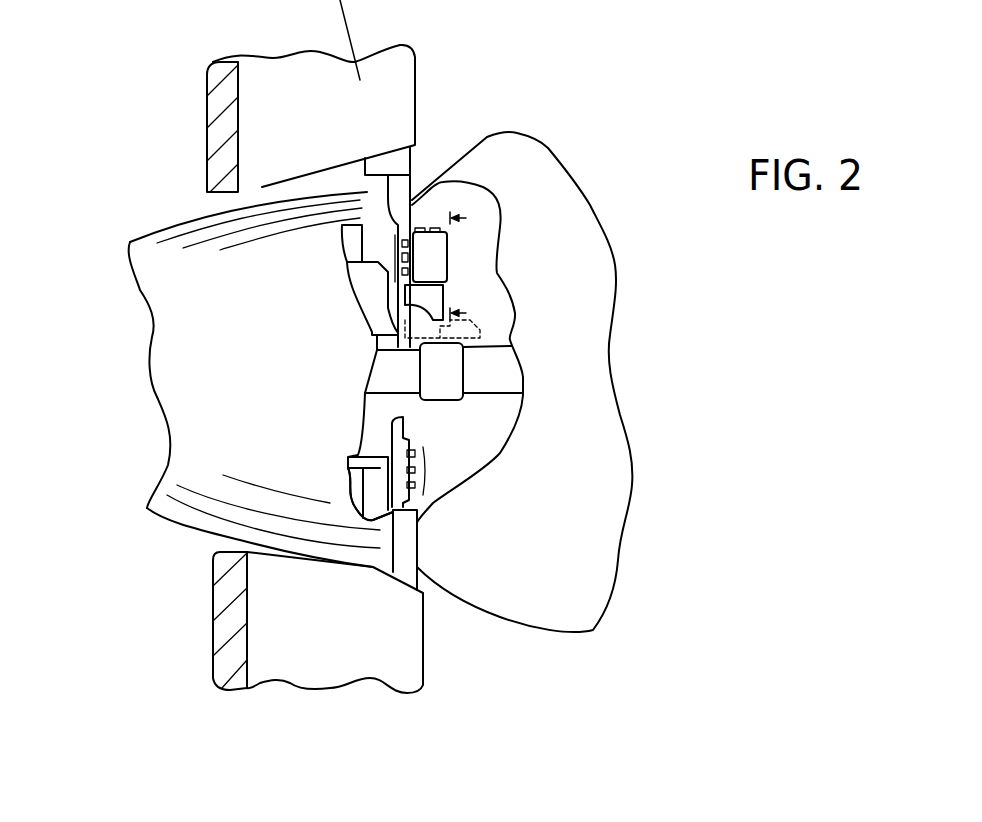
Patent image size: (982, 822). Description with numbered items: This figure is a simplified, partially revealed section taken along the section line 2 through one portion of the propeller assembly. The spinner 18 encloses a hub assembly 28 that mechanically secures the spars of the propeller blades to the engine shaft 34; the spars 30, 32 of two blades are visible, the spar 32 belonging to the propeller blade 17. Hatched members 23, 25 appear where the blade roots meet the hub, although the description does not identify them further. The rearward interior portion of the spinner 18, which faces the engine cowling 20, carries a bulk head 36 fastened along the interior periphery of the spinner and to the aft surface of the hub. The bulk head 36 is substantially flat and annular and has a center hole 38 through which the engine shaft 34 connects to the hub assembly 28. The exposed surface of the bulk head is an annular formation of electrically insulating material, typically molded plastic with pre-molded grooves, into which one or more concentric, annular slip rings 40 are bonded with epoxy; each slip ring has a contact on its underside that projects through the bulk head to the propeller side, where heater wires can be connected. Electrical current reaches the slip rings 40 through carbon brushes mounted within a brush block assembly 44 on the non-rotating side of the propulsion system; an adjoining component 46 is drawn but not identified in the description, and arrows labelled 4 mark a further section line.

The section line 2 is at (737, 0).
The section line for FIG. 4 is at (468, 267).
The propeller blade 17 is at (360, 657).
The spinner 18 is at (167, 348).
The engine cowling 20 is at (532, 172).
The upper bearing insert 23 is at (217, 102).
The lower bearing insert 25 is at (228, 627).
The hub assembly 28 is at (375, 410).
The spar 30 is at (352, 235).
The spar 32 is at (348, 510).
The engine shaft 34 is at (395, 368).
The bulk head 36 is at (407, 425).
The center hole 38 is at (388, 342).
The slip rings 40 is at (427, 470).
The brush block assembly 44 is at (432, 263).
The sensor element 46 is at (440, 298).